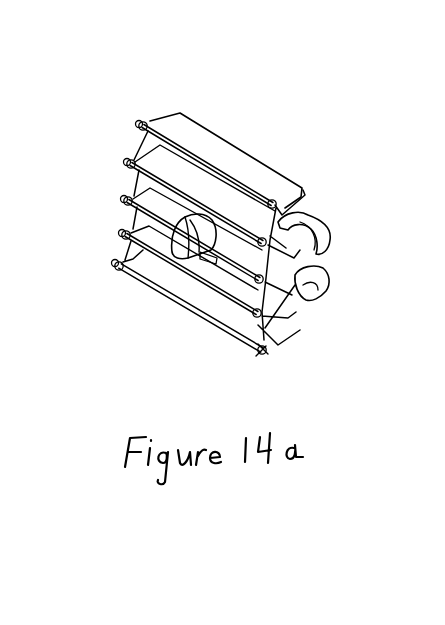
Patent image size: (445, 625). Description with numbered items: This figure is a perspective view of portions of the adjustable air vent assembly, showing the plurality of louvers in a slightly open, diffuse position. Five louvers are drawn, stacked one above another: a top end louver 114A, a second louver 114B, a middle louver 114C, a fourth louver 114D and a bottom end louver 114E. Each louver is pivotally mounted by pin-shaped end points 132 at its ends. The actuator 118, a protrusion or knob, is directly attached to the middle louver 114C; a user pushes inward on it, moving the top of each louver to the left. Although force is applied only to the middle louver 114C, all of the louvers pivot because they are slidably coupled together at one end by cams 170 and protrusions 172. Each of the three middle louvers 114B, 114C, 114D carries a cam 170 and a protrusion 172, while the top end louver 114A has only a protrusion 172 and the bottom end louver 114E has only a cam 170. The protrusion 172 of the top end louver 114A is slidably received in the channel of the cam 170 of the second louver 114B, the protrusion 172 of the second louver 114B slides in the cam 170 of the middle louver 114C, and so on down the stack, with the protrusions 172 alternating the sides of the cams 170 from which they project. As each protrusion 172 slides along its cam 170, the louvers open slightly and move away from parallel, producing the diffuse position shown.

The top end louver 114A is at (178, 130).
The second louver 114B is at (165, 160).
The middle louver 114C is at (35, 197).
The middle louver 114D is at (147, 232).
The bottom end louver 114E is at (173, 342).
The actuator 118 is at (200, 213).
The pin-shaped end points 132 is at (355, 378).
The cam 170 is at (323, 292).
The protrusion 172 is at (443, 242).